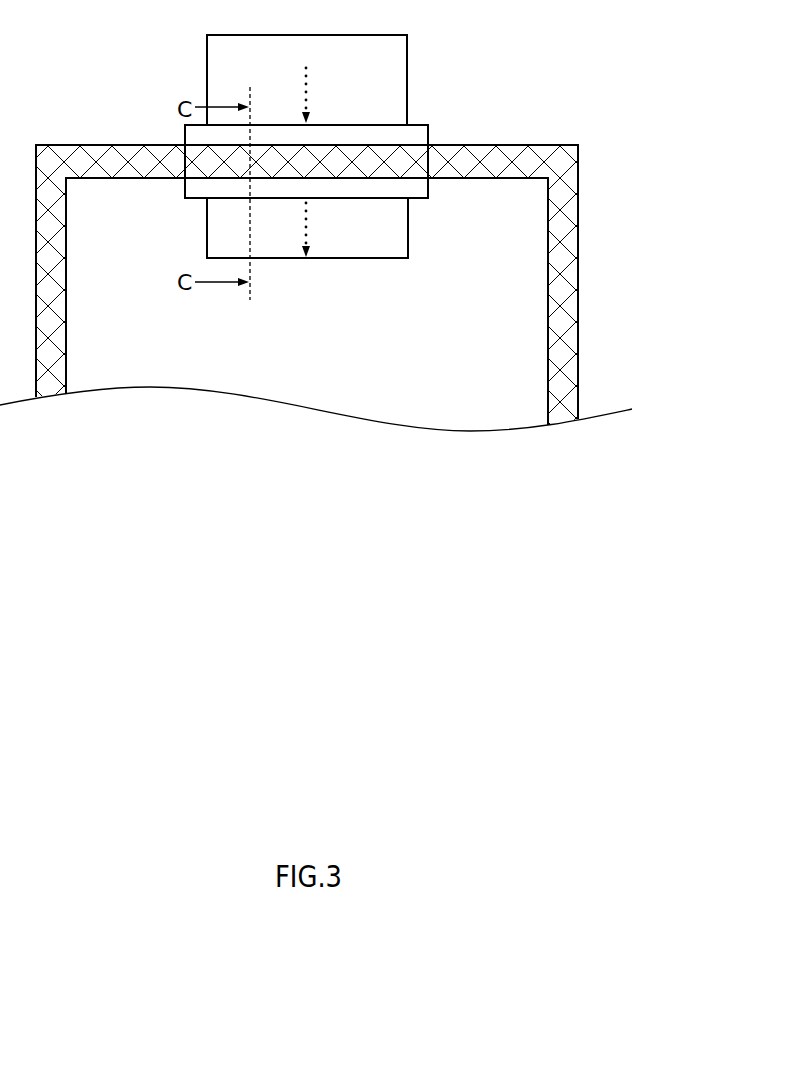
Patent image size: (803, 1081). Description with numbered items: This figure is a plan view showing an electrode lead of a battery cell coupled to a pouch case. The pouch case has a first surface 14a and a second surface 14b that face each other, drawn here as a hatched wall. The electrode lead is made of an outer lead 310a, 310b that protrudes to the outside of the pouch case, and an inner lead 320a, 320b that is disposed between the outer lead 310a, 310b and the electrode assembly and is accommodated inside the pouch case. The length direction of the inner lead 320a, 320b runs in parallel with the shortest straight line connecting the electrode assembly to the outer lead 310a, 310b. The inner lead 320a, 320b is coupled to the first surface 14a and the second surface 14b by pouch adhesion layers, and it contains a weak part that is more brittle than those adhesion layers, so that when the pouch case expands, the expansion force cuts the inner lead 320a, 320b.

The first surface 14a is at (401, 280).
The second surface 14b is at (537, 210).
The outer lead 310a is at (380, 80).
The outer lead 310b is at (400, 80).
The inner lead 320a is at (330, 256).
The inner lead 320b is at (368, 262).